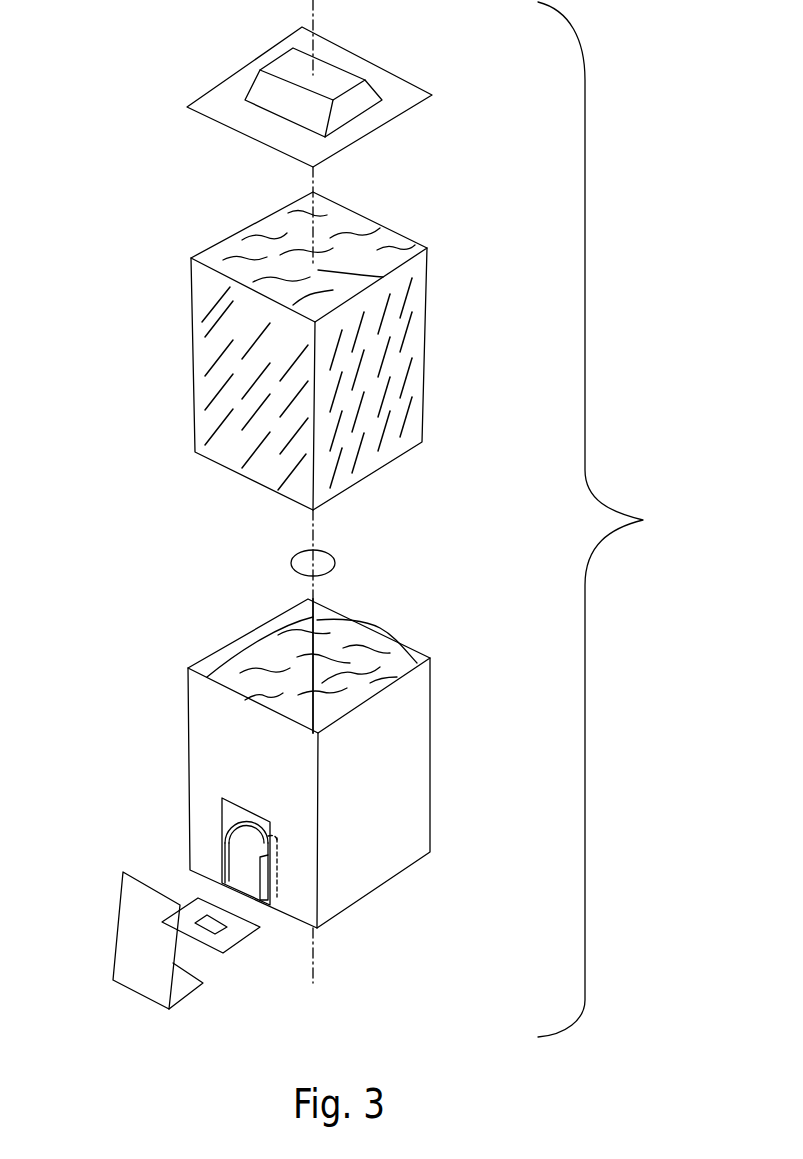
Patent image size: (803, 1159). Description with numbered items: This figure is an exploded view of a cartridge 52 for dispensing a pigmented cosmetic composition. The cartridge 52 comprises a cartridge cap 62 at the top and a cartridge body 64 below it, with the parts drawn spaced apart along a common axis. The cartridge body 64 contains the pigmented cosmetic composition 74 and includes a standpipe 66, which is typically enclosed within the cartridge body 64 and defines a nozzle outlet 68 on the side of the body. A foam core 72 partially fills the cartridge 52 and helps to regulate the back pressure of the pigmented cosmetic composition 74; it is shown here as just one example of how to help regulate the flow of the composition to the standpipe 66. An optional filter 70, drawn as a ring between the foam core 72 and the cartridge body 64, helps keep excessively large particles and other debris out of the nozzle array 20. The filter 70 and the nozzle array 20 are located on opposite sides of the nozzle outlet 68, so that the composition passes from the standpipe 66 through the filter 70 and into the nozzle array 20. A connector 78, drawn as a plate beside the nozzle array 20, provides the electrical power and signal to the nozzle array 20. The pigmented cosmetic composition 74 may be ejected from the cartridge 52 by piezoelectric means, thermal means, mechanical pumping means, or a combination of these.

The cartridge 52 is at (607, 519).
The cartridge cap 62 is at (397, 70).
The foam core 72 is at (427, 340).
The filter 70 is at (336, 562).
The pigmented cosmetic composition 74 is at (365, 667).
The cartridge body 64 is at (430, 702).
The standpipe 66 is at (272, 832).
The nozzle outlet 68 is at (247, 885).
The nozzle array 20 is at (243, 942).
The connector 78 is at (188, 997).